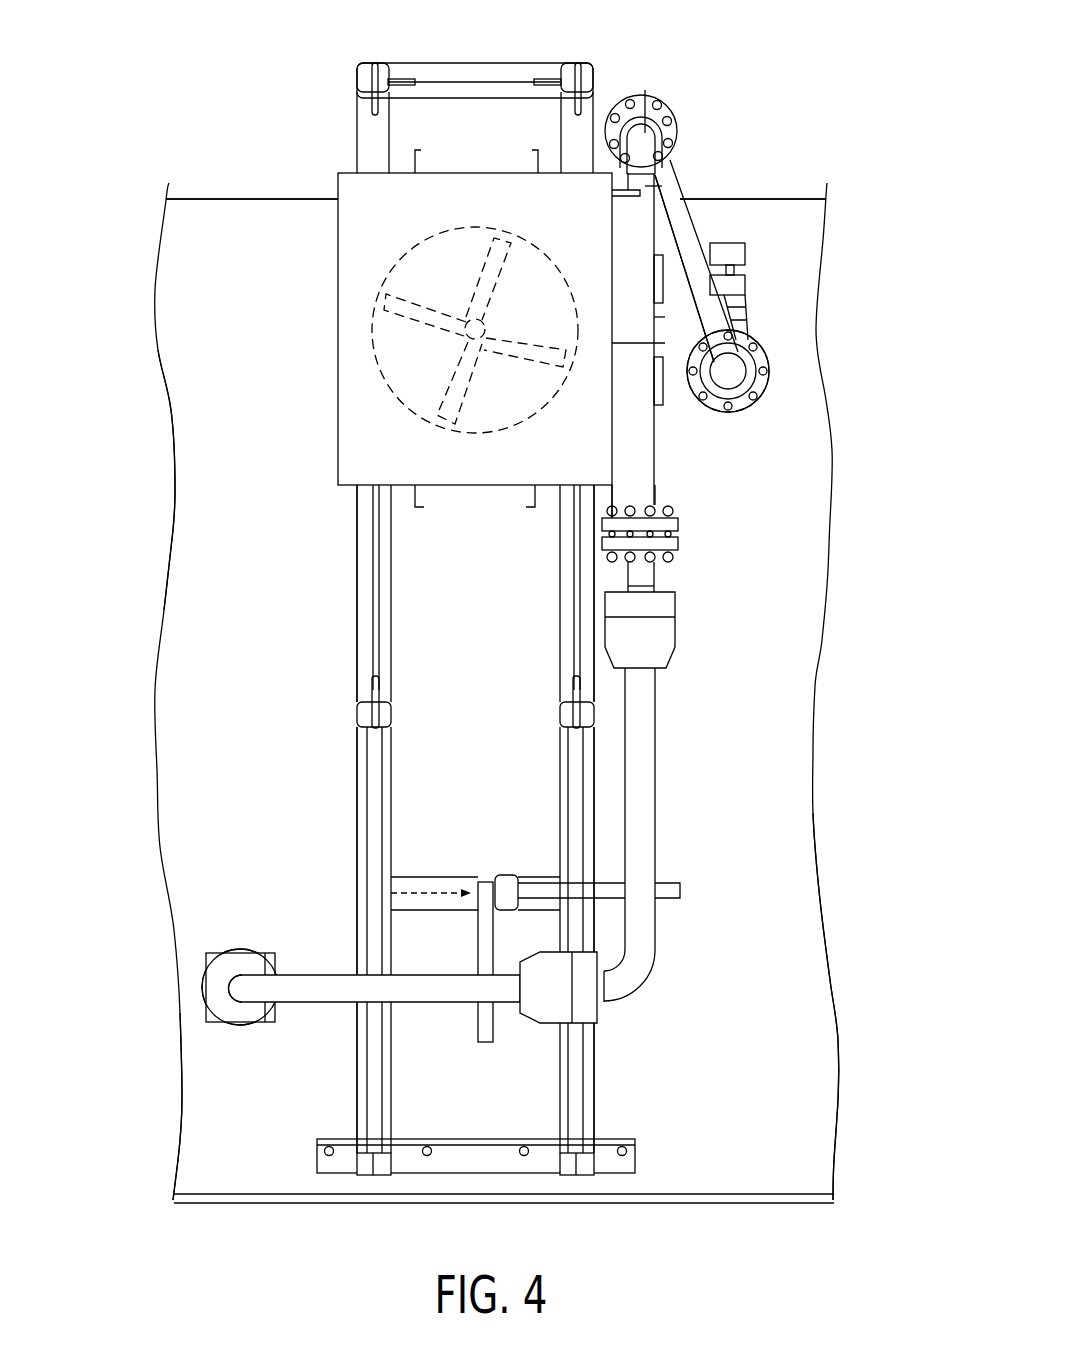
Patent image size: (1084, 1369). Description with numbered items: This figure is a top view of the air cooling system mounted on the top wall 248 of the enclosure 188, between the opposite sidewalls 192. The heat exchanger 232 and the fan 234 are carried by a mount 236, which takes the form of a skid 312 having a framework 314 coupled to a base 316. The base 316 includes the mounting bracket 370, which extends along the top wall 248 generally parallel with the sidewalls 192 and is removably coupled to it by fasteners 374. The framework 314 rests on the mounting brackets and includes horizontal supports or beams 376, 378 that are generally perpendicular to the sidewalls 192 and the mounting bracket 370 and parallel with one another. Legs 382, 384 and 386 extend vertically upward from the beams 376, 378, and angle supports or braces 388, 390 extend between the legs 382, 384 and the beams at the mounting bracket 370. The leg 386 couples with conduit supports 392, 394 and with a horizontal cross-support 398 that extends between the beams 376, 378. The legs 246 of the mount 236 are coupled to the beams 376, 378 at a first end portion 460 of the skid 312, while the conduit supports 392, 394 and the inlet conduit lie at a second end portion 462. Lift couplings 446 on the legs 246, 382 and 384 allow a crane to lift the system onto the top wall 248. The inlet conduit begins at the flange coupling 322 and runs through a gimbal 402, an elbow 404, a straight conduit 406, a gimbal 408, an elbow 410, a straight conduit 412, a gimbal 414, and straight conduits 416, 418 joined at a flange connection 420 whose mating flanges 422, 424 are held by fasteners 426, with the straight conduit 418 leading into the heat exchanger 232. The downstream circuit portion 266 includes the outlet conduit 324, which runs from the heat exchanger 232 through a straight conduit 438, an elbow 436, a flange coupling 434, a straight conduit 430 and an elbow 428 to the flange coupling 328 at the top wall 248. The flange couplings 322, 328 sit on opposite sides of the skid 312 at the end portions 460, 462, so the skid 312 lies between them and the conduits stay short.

The enclosure 188 is at (840, 1136).
The sidewall 192 is at (232, 199).
The heat exchanger 232 is at (338, 340).
The fan 234 is at (398, 402).
The mount 236 is at (208, 550).
The legs 246 is at (418, 158).
The top wall 248 is at (802, 1077).
The circuit portion 266 is at (778, 142).
The skid 312 is at (298, 792).
The framework 314 is at (326, 636).
The base 316 is at (300, 1152).
The flange coupling 322 is at (241, 1026).
The outlet conduit 324 is at (712, 226).
The flange coupling 328 is at (766, 380).
The mounting bracket 370 is at (613, 1175).
The fasteners 374 is at (521, 1149).
The horizontal support or beam 376 is at (560, 594).
The horizontal support or beam 378 is at (393, 612).
The leg 382 is at (562, 716).
The leg 384 is at (393, 715).
The leg 386 is at (507, 878).
The angle support or brace 388 is at (560, 800).
The angle support or brace 390 is at (392, 778).
The conduit support 392 is at (478, 926).
The conduit support 394 is at (680, 882).
The horizontal cross-support 398 is at (419, 876).
The gimbal 402 is at (212, 952).
The elbow 404 is at (243, 985).
The straight conduit 406 is at (323, 975).
The gimbal 408 is at (586, 1012).
The elbow 410 is at (640, 989).
The straight conduit 412 is at (656, 718).
The gimbal 414 is at (677, 634).
The straight conduit 416 is at (656, 578).
The straight conduit 418 is at (656, 492).
The flange connection 420 is at (578, 535).
The flange 422 is at (680, 545).
The flange 424 is at (680, 524).
The fasteners 426 is at (674, 560).
The elbow 428 is at (767, 350).
The straight conduit 430 is at (714, 323).
The flange coupling 434 is at (678, 110).
The elbow 436 is at (666, 94).
The straight conduit 438 is at (650, 188).
The lift couplings 446 is at (364, 75).
The first end portion 460 is at (236, 267).
The second end portion 462 is at (126, 1078).